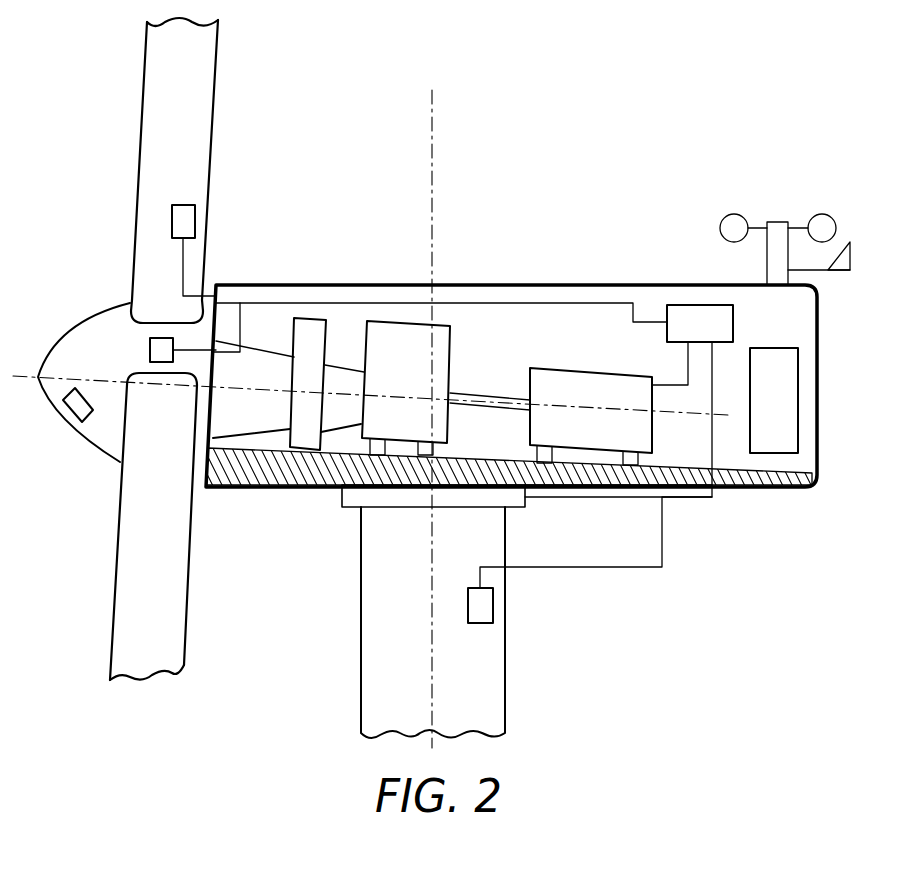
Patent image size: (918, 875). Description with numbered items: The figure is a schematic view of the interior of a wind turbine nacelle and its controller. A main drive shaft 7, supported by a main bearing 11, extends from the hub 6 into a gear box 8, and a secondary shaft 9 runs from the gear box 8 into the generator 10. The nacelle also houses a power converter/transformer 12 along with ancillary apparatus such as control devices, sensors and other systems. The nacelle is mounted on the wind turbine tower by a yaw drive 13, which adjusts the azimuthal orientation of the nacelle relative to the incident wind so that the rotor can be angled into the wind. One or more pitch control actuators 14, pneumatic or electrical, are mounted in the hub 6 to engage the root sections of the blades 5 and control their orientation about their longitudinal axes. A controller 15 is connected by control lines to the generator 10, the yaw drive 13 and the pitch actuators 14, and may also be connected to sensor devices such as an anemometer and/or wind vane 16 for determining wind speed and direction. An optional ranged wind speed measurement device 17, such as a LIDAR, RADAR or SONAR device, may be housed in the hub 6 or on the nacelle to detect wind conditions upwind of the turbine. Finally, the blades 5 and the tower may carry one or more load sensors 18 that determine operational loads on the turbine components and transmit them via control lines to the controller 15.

The rotor blade 5 is at (140, 128).
The hub 6 is at (88, 325).
The main drive shaft 7 is at (266, 351).
The gear box 8 is at (400, 322).
The secondary shaft 9 is at (490, 393).
The generator 10 is at (553, 368).
The main bearing 11 is at (313, 318).
The power converter/transformer 12 is at (798, 362).
The yaw drive 13 is at (525, 507).
The pitch control actuator 14 is at (150, 350).
The controller 15 is at (690, 305).
The anemometer and/or wind vane 16 is at (778, 222).
The LIDAR, RADAR or SONAR device 17 is at (64, 413).
The sensor 18 is at (195, 220).